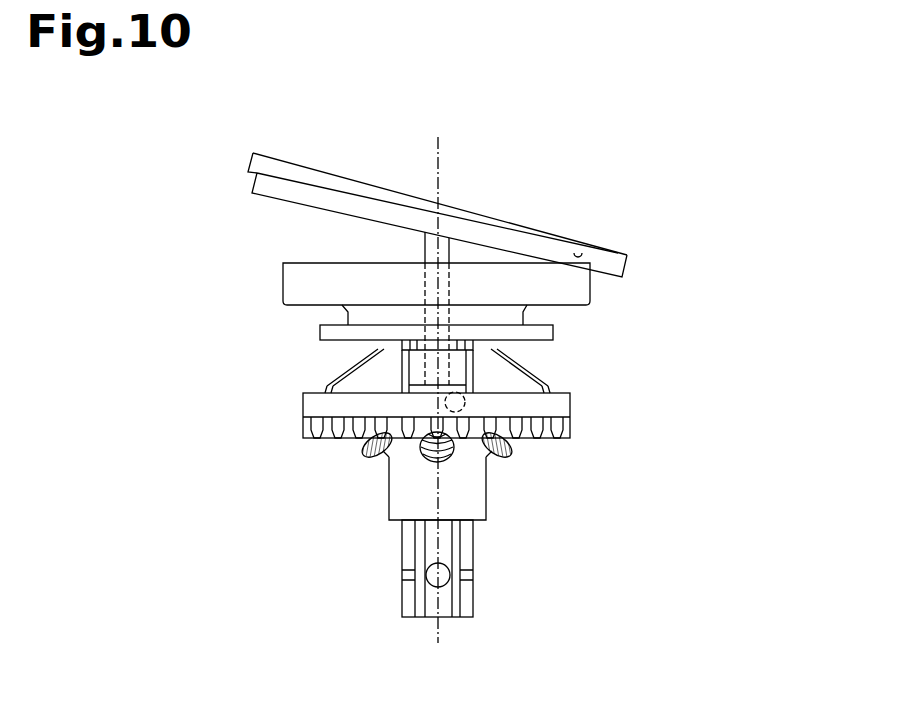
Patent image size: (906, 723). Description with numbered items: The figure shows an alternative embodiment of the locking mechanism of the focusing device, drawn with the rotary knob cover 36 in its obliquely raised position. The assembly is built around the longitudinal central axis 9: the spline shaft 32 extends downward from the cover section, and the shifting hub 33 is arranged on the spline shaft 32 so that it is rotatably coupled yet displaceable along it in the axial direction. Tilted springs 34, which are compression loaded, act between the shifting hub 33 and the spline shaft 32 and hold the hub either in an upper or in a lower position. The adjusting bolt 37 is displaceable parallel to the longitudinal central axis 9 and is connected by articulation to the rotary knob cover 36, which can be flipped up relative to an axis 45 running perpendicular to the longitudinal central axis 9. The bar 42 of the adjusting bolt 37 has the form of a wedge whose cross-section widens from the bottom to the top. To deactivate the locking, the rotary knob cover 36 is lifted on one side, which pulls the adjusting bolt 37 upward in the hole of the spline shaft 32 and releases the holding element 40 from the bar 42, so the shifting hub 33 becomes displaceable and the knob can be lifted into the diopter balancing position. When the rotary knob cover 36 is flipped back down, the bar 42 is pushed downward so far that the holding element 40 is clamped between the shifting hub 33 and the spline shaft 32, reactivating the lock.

The longitudinal central axis 9 is at (430, 146).
The spline shaft 32 is at (482, 586).
The shifting hub 33 is at (580, 415).
The tilted springs 34 is at (370, 460).
The rotary knob cover 36 is at (268, 201).
The adjusting bolt 37 is at (406, 241).
The holding element 40 is at (469, 379).
The bar 42 is at (411, 369).
The axis 45 is at (592, 236).